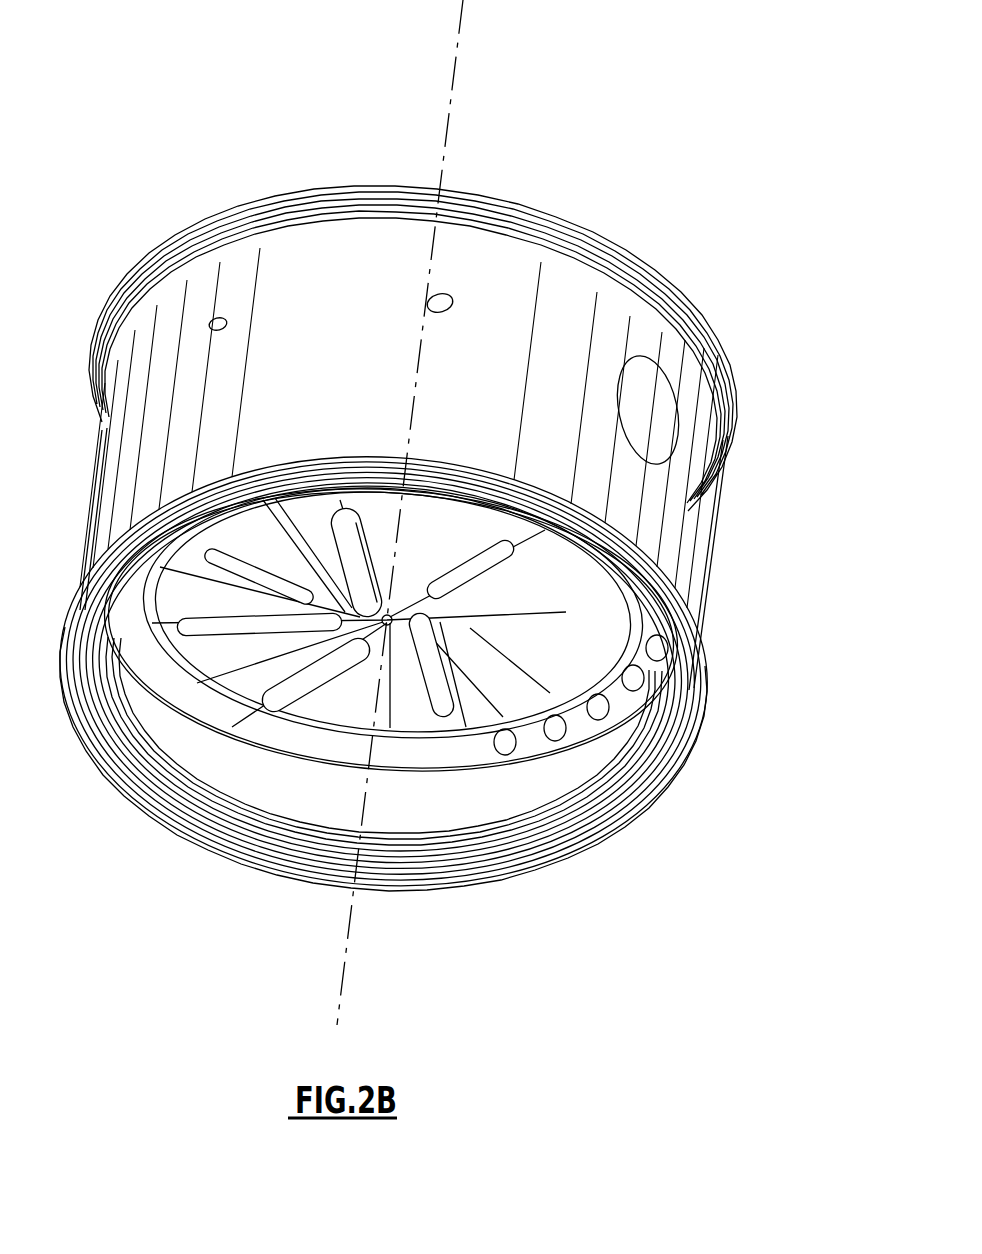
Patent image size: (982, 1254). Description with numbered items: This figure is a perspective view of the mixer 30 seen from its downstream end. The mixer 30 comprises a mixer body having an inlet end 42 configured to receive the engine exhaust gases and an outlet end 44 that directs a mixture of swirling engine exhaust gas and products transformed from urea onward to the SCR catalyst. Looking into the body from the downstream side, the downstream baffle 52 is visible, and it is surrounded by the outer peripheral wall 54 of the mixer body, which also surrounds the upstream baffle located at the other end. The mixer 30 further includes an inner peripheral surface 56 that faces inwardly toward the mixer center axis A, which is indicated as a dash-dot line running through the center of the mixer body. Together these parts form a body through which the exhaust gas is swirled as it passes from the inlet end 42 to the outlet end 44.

The mixer center axis A is at (461, 38).
The mixer 30 is at (726, 205).
The inlet end 42 is at (721, 361).
The outlet end 44 is at (676, 771).
The downstream baffle 52 is at (588, 648).
The outer peripheral wall 54 is at (675, 553).
The inner peripheral surface 56 is at (602, 817).